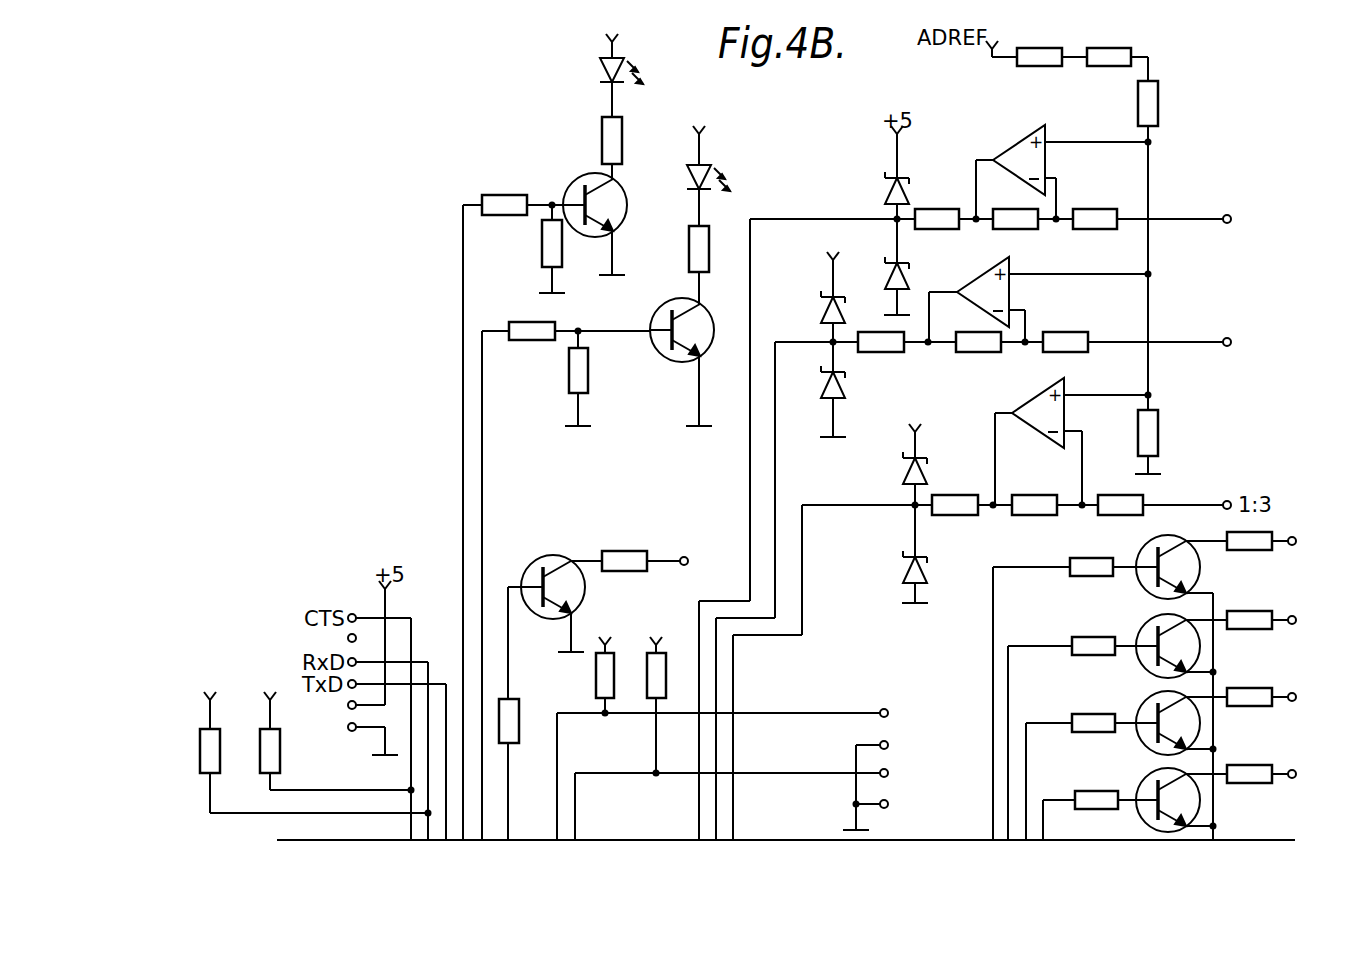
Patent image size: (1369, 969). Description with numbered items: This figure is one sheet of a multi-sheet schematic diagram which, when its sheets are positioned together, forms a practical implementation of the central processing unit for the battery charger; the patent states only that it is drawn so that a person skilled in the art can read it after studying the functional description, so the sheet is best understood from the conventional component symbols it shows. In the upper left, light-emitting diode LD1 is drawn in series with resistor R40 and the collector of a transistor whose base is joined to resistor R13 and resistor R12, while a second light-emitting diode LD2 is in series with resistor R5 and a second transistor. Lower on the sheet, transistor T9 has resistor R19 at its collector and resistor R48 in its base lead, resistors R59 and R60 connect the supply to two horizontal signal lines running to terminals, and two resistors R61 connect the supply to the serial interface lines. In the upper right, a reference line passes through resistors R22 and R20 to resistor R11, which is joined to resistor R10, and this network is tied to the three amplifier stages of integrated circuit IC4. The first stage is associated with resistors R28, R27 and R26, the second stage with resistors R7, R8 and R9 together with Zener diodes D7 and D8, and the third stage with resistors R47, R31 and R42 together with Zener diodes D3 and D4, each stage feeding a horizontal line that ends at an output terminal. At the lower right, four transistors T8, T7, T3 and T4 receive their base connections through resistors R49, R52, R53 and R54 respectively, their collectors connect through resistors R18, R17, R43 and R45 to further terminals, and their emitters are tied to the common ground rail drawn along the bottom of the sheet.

The light emitting diode LD1 is at (600, 66).
The light emitting diode LD2 is at (708, 174).
The resistor R40 is at (605, 140).
The resistor R13 is at (512, 205).
The resistor R12 is at (545, 248).
The resistor R5 is at (695, 253).
The transistor T9 is at (537, 572).
The resistor R19 is at (632, 558).
The resistor R48 is at (500, 703).
The resistor R59 is at (597, 684).
The resistor R60 is at (652, 696).
The resistor R61 is at (205, 755).
The resistor R22 is at (1035, 62).
The resistor R20 is at (1105, 62).
The resistor R11 is at (1140, 100).
The resistor R10 is at (1150, 437).
The operational amplifier IC4 is at (1027, 155).
The resistor R28 is at (935, 208).
The resistor R27 is at (1028, 226).
The resistor R26 is at (1090, 209).
The zener diode D7 is at (822, 310).
The zener diode D8 is at (845, 396).
The resistor R7 is at (872, 345).
The resistor R8 is at (973, 345).
The resistor R9 is at (1058, 337).
The zener diode D3 is at (902, 472).
The zener diode D4 is at (903, 573).
The resistor R47 is at (950, 508).
The resistor R31 is at (1023, 507).
The resistor R42 is at (1112, 502).
The transistor T8 is at (1142, 560).
The resistor R49 is at (1080, 572).
The resistor R18 is at (1243, 549).
The transistor T7 is at (1142, 632).
The resistor R52 is at (1095, 640).
The resistor R17 is at (1245, 629).
The transistor T3 is at (1147, 708).
The resistor R53 is at (1088, 718).
The resistor R43 is at (1245, 706).
The transistor T4 is at (1147, 785).
The resistor R54 is at (1090, 795).
The resistor R45 is at (1248, 784).